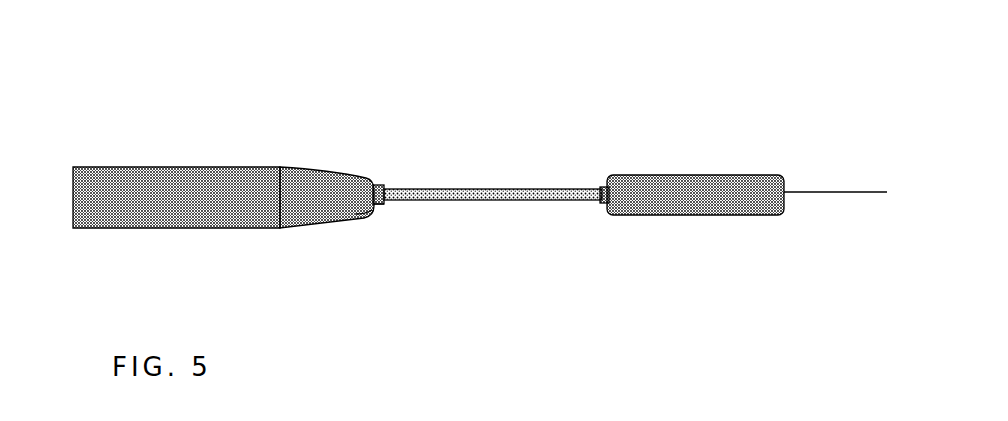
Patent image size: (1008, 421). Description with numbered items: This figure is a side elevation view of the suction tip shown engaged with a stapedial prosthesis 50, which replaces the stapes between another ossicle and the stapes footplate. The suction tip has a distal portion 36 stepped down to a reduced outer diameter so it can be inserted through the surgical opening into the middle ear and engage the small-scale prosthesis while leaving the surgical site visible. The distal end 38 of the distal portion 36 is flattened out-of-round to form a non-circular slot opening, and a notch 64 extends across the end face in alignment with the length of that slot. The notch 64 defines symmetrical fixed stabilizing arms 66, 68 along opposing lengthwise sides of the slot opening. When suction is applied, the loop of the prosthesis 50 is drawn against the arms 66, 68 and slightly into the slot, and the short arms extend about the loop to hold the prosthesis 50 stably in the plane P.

The stapedial prosthesis 50 is at (545, 122).
The distal portion 36 is at (106, 168).
The distal end 38 is at (332, 172).
The stabilizing arm 66 is at (374, 186).
The notch 64 is at (355, 214).
The stabilizing arm 68 is at (375, 212).
The plane P is at (845, 188).